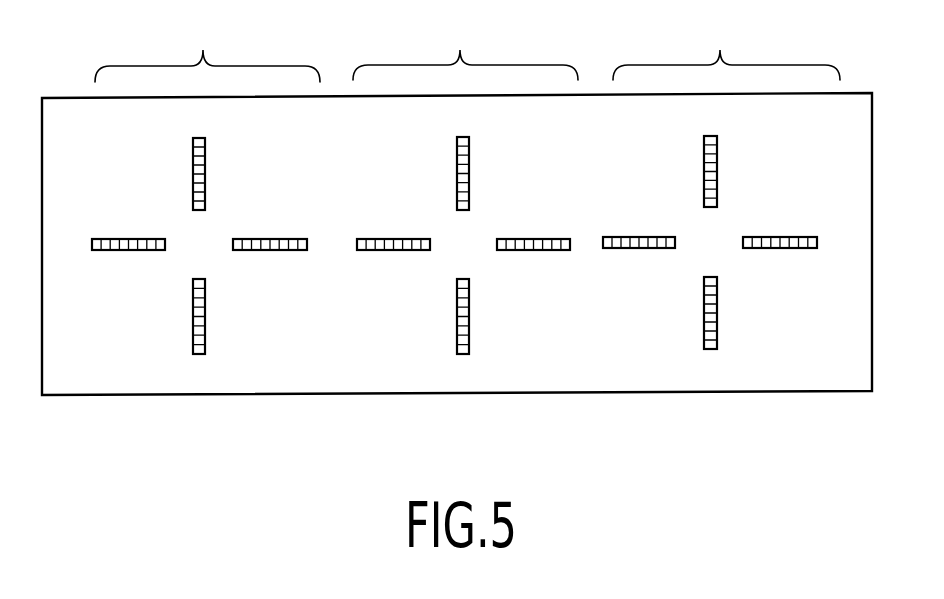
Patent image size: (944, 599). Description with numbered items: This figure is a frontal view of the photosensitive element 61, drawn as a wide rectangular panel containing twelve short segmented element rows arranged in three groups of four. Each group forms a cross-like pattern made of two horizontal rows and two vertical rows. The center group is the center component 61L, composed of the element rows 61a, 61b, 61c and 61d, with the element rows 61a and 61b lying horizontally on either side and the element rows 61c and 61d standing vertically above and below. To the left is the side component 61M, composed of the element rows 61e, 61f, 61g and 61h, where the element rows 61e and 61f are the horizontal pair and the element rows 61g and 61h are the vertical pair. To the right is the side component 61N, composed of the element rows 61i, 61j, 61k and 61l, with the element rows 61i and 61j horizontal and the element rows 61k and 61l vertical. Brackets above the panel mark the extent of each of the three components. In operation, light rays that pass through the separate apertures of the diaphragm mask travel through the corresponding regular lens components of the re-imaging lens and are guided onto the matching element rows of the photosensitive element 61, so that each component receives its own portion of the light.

The photosensitive element 61 is at (678, 420).
The side component 61M is at (207, 51).
The center component 61L is at (465, 49).
The side component 61N is at (726, 49).
The element row 61a is at (425, 252).
The element row 61b is at (515, 252).
The element row 61c is at (457, 193).
The element row 61d is at (470, 287).
The element row 61e is at (160, 252).
The element row 61f is at (252, 252).
The element row 61g is at (193, 193).
The element row 61h is at (207, 287).
The element row 61i is at (668, 250).
The element row 61j is at (760, 250).
The element row 61k is at (704, 190).
The element row 61l is at (717, 285).